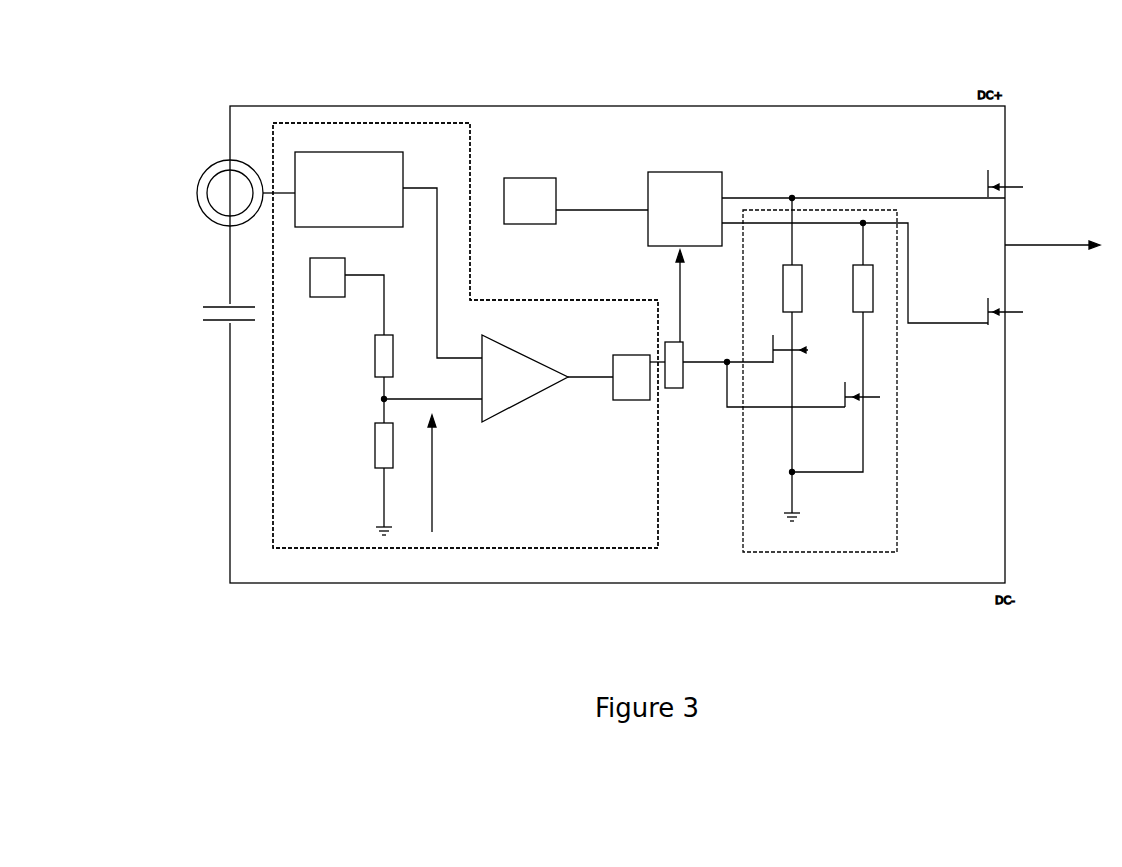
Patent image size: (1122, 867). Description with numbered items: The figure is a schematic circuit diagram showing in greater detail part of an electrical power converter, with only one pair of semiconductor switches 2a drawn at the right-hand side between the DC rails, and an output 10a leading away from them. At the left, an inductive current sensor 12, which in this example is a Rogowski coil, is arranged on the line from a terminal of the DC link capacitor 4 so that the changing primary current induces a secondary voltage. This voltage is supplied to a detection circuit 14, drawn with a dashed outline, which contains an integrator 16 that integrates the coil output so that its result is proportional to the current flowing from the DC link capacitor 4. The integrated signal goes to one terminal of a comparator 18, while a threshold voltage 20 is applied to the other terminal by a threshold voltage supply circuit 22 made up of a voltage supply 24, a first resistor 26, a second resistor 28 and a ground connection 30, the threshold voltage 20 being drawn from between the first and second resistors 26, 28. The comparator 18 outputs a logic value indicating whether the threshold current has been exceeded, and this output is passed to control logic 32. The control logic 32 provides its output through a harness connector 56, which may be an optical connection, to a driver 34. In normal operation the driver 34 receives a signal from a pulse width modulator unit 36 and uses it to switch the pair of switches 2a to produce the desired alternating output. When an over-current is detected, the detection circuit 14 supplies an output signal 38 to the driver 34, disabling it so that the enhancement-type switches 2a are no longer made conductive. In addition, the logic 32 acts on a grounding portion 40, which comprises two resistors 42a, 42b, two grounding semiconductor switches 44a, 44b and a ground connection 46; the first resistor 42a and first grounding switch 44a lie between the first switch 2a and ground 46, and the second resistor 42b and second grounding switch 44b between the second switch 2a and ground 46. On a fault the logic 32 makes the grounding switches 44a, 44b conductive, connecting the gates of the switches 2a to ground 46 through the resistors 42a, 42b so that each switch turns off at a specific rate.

The semiconductor switches 2a is at (1028, 177).
The DC link capacitor 4 is at (215, 320).
The output 10a is at (1043, 247).
The inductive current sensor 12 is at (198, 178).
The detection circuit 14 is at (472, 143).
The integrator 16 is at (388, 255).
The comparator 18 is at (522, 397).
The threshold voltage 20 is at (437, 490).
The threshold voltage supply circuit 22 is at (322, 505).
The voltage supply 24 is at (347, 296).
The first resistor 26 is at (374, 357).
The second resistor 28 is at (374, 455).
The ground connection 30 is at (386, 532).
The control logic 32 is at (633, 355).
The driver 34 is at (826, 247).
The pulse width modulator unit 36 is at (576, 201).
The output signal 38 is at (687, 320).
The grounding portion 40 is at (778, 553).
The first resistor of grounding portion 42a is at (800, 285).
The second resistor of grounding portion 42b is at (872, 288).
The first grounding semiconductor switch 44a is at (820, 350).
The second grounding semiconductor switch 44b is at (883, 406).
The ground connection 46 is at (797, 512).
The harness connector 56 is at (676, 390).